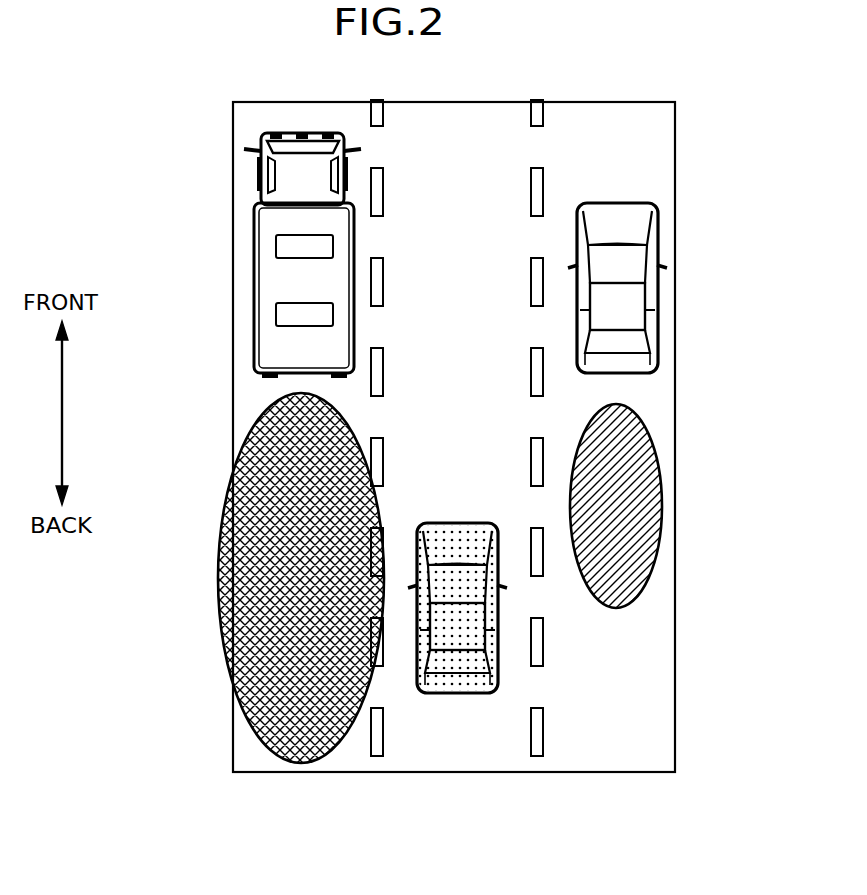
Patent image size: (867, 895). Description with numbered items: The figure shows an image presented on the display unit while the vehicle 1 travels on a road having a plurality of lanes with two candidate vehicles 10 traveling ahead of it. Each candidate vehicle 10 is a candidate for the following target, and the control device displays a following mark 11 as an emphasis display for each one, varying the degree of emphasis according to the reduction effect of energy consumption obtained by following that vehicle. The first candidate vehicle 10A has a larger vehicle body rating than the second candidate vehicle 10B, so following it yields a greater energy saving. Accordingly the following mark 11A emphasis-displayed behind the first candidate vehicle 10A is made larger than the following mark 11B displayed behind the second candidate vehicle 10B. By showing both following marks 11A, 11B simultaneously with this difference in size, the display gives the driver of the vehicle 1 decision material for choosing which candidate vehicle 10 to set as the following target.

The vehicle 1 is at (448, 693).
The candidate vehicle 10 is at (454, 255).
The first candidate vehicle 10A is at (253, 247).
The second candidate vehicle 10B is at (660, 283).
The following mark 11 is at (455, 578).
The following mark 11A is at (245, 437).
The following mark 11B is at (660, 505).